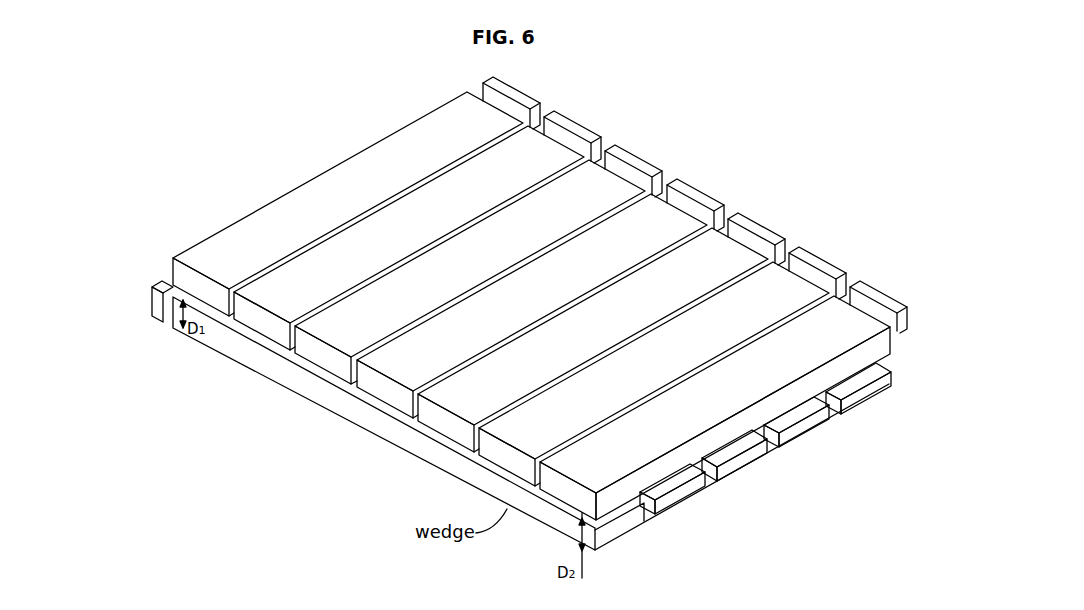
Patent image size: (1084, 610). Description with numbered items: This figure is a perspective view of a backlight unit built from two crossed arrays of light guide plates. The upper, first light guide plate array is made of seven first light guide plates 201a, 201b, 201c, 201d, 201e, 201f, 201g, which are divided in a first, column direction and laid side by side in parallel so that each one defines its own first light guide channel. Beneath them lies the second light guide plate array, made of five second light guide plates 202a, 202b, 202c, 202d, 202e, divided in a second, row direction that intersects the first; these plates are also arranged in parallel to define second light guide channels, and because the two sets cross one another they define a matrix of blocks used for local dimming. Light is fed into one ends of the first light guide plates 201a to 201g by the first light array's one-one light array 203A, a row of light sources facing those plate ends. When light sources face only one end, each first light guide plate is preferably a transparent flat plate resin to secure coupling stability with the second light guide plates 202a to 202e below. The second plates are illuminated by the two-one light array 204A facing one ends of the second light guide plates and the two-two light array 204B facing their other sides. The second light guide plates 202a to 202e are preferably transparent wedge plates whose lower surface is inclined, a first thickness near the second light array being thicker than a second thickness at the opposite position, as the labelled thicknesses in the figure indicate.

The first light guide plate 201a is at (371, 197).
The first light guide plate 201b is at (433, 231).
The first light guide plate 201c is at (492, 267).
The first light guide plate 201d is at (554, 300).
The first light guide plate 201e is at (615, 334).
The first light guide plate 201f is at (673, 368).
The first light guide plate 201g is at (739, 402).
The second light guide plate 202a is at (884, 397).
The second light guide plate 202b is at (800, 427).
The second light guide plate 202c is at (740, 463).
The second light guide plate 202d is at (677, 498).
The second light guide plate 202e is at (617, 532).
The 1-1 light array 203A is at (892, 278).
The 2-1 light array 204A is at (156, 302).
The 2-2 light array 204B is at (769, 473).